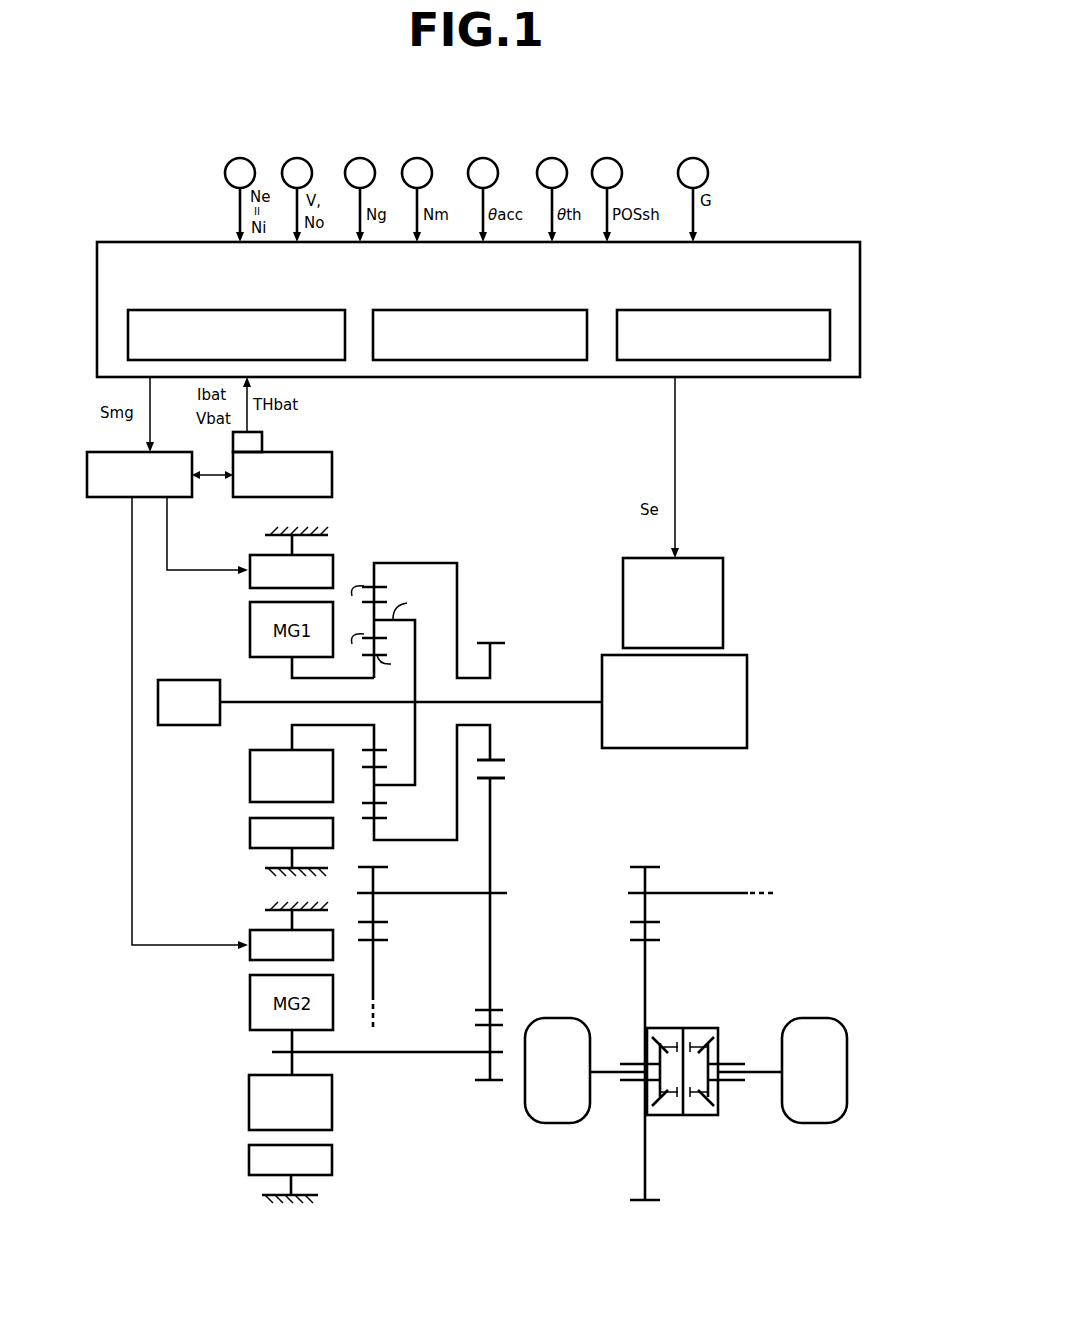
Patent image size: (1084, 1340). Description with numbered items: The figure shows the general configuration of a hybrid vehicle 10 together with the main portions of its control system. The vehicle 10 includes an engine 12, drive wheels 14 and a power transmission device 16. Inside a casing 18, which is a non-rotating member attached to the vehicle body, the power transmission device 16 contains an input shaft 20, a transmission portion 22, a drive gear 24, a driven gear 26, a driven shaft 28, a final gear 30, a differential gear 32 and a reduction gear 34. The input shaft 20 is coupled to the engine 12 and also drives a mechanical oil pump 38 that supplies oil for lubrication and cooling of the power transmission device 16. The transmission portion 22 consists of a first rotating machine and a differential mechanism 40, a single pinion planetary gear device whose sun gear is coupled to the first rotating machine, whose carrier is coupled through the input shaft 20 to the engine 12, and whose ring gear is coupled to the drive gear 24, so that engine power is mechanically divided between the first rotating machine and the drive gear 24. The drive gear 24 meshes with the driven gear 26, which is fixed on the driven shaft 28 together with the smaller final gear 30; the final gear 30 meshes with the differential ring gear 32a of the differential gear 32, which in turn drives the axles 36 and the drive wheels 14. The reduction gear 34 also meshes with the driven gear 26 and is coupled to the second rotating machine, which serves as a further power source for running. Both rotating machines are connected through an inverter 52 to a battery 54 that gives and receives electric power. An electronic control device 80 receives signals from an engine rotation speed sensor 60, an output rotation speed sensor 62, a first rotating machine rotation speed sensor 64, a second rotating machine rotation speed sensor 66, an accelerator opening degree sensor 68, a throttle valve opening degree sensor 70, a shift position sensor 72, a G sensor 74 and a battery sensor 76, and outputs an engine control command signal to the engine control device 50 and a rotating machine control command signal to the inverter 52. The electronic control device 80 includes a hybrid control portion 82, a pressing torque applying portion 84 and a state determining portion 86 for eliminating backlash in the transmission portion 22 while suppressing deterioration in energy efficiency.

The vehicle 10 is at (852, 119).
The engine 12 is at (645, 741).
The drive wheels 14 is at (556, 1122).
The power transmission device 16 is at (432, 1198).
The casing 18 is at (305, 530).
The input shaft 20 is at (542, 698).
The transmission portion 22 is at (421, 629).
The drive gear 24 is at (497, 762).
The driven gear 26 is at (497, 779).
The driven shaft 28 is at (413, 893).
The final gear 30 is at (381, 921).
The differential gear 32 is at (694, 1146).
The differential ring gear 32a is at (380, 941).
The reduction gear 34 is at (478, 1079).
The axles 36 is at (612, 1077).
The oil pump 38 is at (184, 726).
The differential mechanism 40 is at (375, 545).
The engine control device 50 is at (711, 566).
The inverter 52 is at (173, 499).
The battery 54 is at (240, 499).
The engine rotation speed sensor 60 is at (242, 159).
The output rotation speed sensor 62 is at (299, 159).
The MG1 rotation speed sensor 64 is at (362, 159).
The MG2 rotation speed sensor 66 is at (419, 159).
The accelerator opening degree sensor 68 is at (485, 159).
The throttle valve opening degree sensor 70 is at (554, 159).
The shift position sensor 72 is at (609, 159).
The G sensor 74 is at (695, 159).
The battery sensor 76 is at (258, 441).
The electronic control device 80 is at (808, 258).
The hybrid control portion 82 is at (298, 311).
The pressing torque applying portion 84 is at (540, 311).
The state determining portion 86 is at (782, 311).